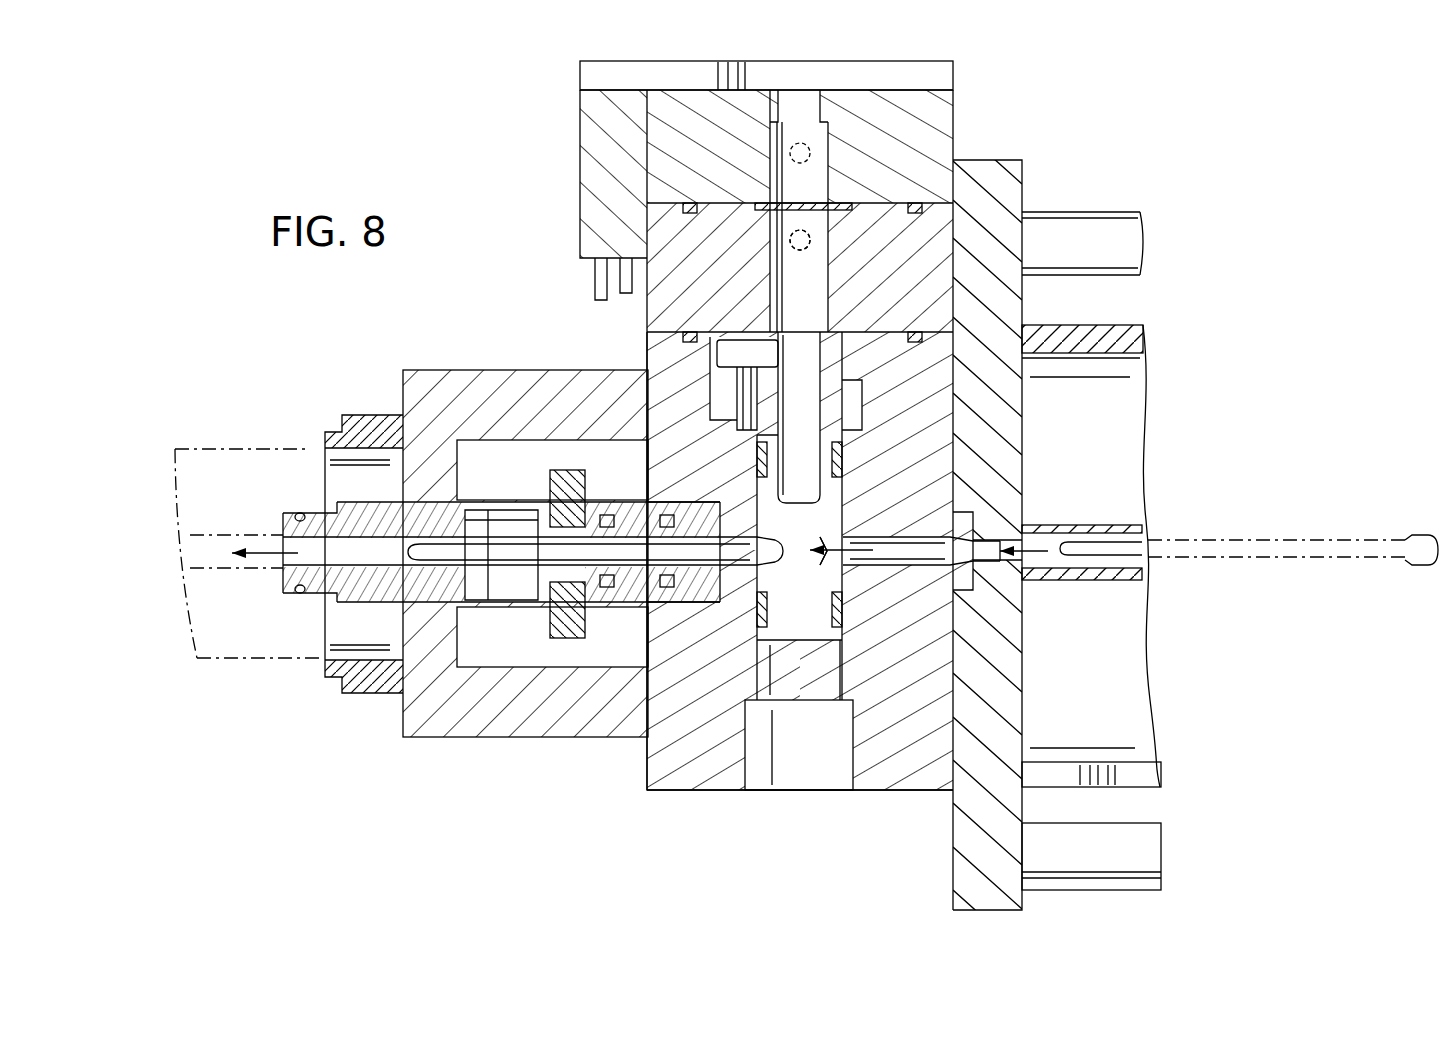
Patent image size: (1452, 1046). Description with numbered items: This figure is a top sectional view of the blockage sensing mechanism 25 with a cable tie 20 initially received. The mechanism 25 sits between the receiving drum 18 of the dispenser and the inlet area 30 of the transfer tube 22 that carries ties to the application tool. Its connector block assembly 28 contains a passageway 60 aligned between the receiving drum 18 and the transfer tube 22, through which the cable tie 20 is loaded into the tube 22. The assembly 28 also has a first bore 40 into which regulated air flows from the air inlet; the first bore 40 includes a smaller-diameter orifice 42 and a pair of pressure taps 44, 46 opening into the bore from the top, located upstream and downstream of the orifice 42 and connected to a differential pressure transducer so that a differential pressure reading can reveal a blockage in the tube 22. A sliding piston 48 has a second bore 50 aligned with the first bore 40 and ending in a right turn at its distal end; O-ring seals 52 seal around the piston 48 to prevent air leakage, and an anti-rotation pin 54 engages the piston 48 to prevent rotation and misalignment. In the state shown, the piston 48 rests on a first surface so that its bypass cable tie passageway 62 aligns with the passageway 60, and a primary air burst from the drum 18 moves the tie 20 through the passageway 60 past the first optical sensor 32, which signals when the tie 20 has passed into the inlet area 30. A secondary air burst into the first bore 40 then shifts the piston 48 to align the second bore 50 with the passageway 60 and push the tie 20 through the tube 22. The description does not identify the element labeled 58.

The receiving drum 18 is at (1153, 551).
The cable tie 20 is at (860, 629).
The transfer tube 22 is at (233, 603).
The blockage sensing mechanism 25 is at (541, 195).
The connector block assembly 28 is at (786, 614).
The inlet area 30 is at (325, 615).
The first optical sensor 32 is at (553, 470).
The first bore 40 is at (798, 128).
The orifice 42 is at (810, 203).
The pressure tap 44 is at (812, 145).
The pressure tap 46 is at (815, 247).
The sliding piston 48 is at (793, 635).
The second bore 50 is at (803, 398).
The O-ring seals 52 is at (843, 452).
The anti-rotation pin 54 is at (740, 352).
The sleeve 58 is at (283, 530).
The passageway 60 is at (975, 542).
The piston bypass cable tie passageway 62 is at (935, 532).